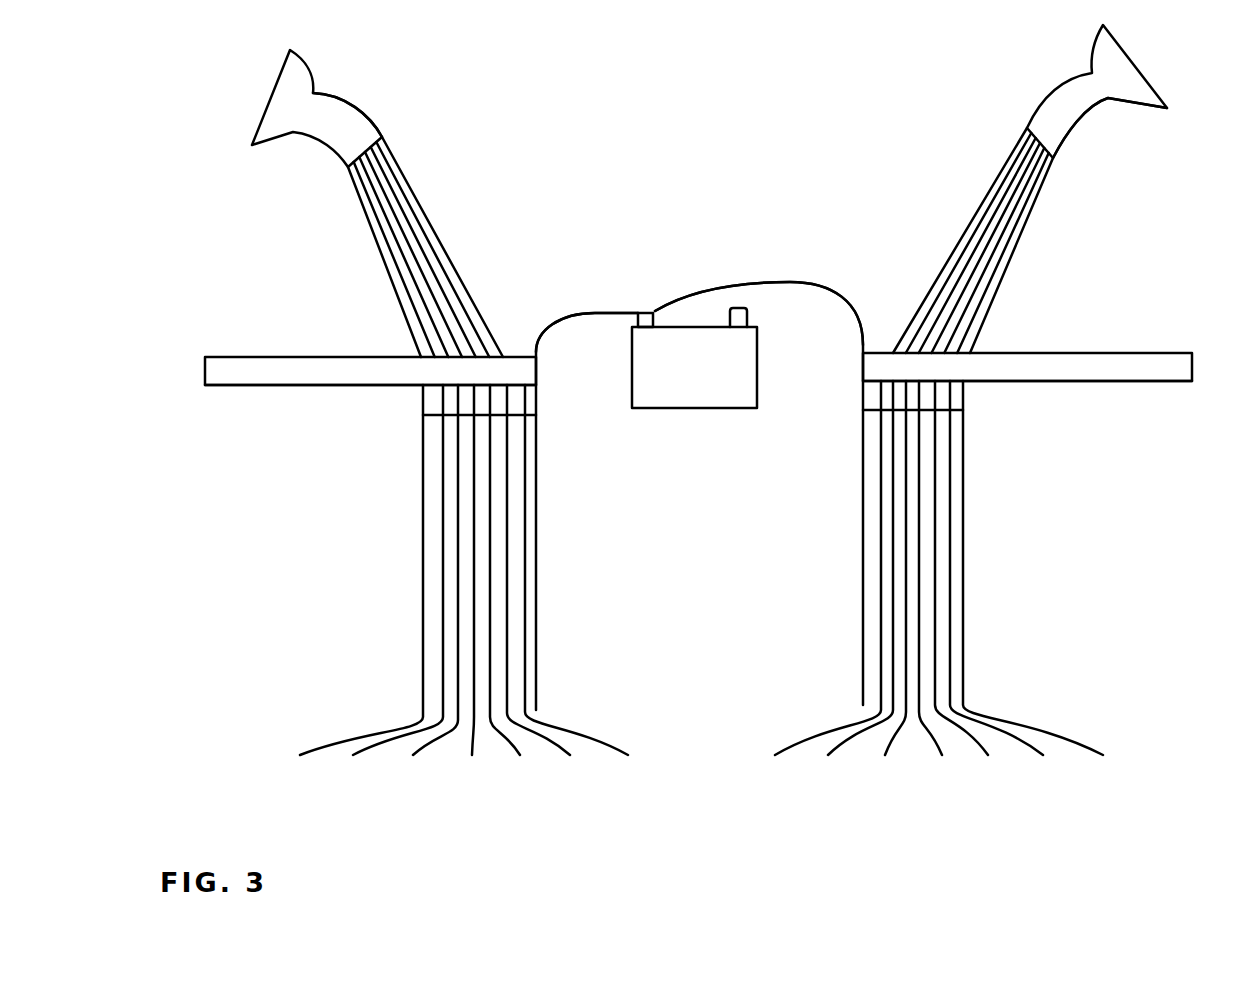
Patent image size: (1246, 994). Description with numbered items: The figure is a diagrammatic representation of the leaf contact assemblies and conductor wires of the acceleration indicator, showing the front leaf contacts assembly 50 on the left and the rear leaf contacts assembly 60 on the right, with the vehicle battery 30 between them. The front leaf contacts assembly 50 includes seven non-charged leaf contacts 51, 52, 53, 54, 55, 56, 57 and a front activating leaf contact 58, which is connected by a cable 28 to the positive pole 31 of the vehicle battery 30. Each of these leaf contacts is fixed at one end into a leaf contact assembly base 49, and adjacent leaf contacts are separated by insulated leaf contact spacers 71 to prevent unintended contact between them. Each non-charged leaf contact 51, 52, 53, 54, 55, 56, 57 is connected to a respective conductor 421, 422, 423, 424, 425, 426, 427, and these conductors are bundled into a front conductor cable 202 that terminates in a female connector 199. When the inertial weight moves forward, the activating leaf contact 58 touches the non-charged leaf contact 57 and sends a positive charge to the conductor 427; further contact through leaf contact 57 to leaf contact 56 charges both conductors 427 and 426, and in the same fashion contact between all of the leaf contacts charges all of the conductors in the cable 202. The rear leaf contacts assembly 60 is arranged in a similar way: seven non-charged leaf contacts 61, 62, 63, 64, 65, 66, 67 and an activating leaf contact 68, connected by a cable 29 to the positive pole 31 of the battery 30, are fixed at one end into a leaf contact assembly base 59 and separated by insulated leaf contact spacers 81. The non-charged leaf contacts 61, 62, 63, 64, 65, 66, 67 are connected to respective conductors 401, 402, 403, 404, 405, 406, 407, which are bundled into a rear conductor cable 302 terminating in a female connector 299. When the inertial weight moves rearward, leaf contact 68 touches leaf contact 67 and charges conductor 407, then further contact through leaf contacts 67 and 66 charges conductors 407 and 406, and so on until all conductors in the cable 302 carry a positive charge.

The female connector 199 is at (254, 145).
The front conductor cable 202 is at (357, 105).
The conductor 421 is at (357, 190).
The conductor 422 is at (382, 223).
The conductor 423 is at (400, 252).
The conductor 424 is at (433, 292).
The conductor 425 is at (437, 277).
The conductor 426 is at (427, 238).
The conductor 427 is at (420, 210).
The leaf contact assembly base 49 is at (258, 372).
The front leaf contacts assembly 50 is at (308, 385).
The insulated leaf contact spacer 71 is at (463, 408).
The non-charged leaf contact 51 is at (350, 586).
The non-charged leaf contact 52 is at (388, 586).
The non-charged leaf contact 53 is at (424, 586).
The non-charged leaf contact 54 is at (467, 586).
The non-charged leaf contact 55 is at (516, 586).
The non-charged leaf contact 56 is at (553, 586).
The non-charged leaf contact 57 is at (590, 586).
The front activating leaf contact 58 is at (539, 603).
The front activating leaf contact 68 is at (863, 590).
The cable 28 is at (588, 314).
The cable 29 is at (727, 285).
The positive pole 31 is at (648, 308).
The vehicle battery 30 is at (672, 410).
The leaf contact assembly base 59 is at (1143, 365).
The rear leaf contacts assembly 60 is at (1075, 380).
The insulated leaf contact spacer 81 is at (927, 392).
The non-charged leaf contact 61 is at (1047, 584).
The non-charged leaf contact 62 is at (1011, 584).
The non-charged leaf contact 63 is at (974, 584).
The non-charged leaf contact 64 is at (938, 584).
The non-charged leaf contact 65 is at (885, 584).
The non-charged leaf contact 66 is at (851, 584).
The non-charged leaf contact 67 is at (816, 584).
The conductor 401 is at (1043, 188).
The conductor 402 is at (1017, 217).
The conductor 403 is at (997, 242).
The conductor 404 is at (973, 270).
The conductor 405 is at (937, 315).
The conductor 406 is at (947, 267).
The conductor 407 is at (977, 210).
The rear conductor cable 302 is at (1040, 96).
The female connector 299 is at (1164, 113).